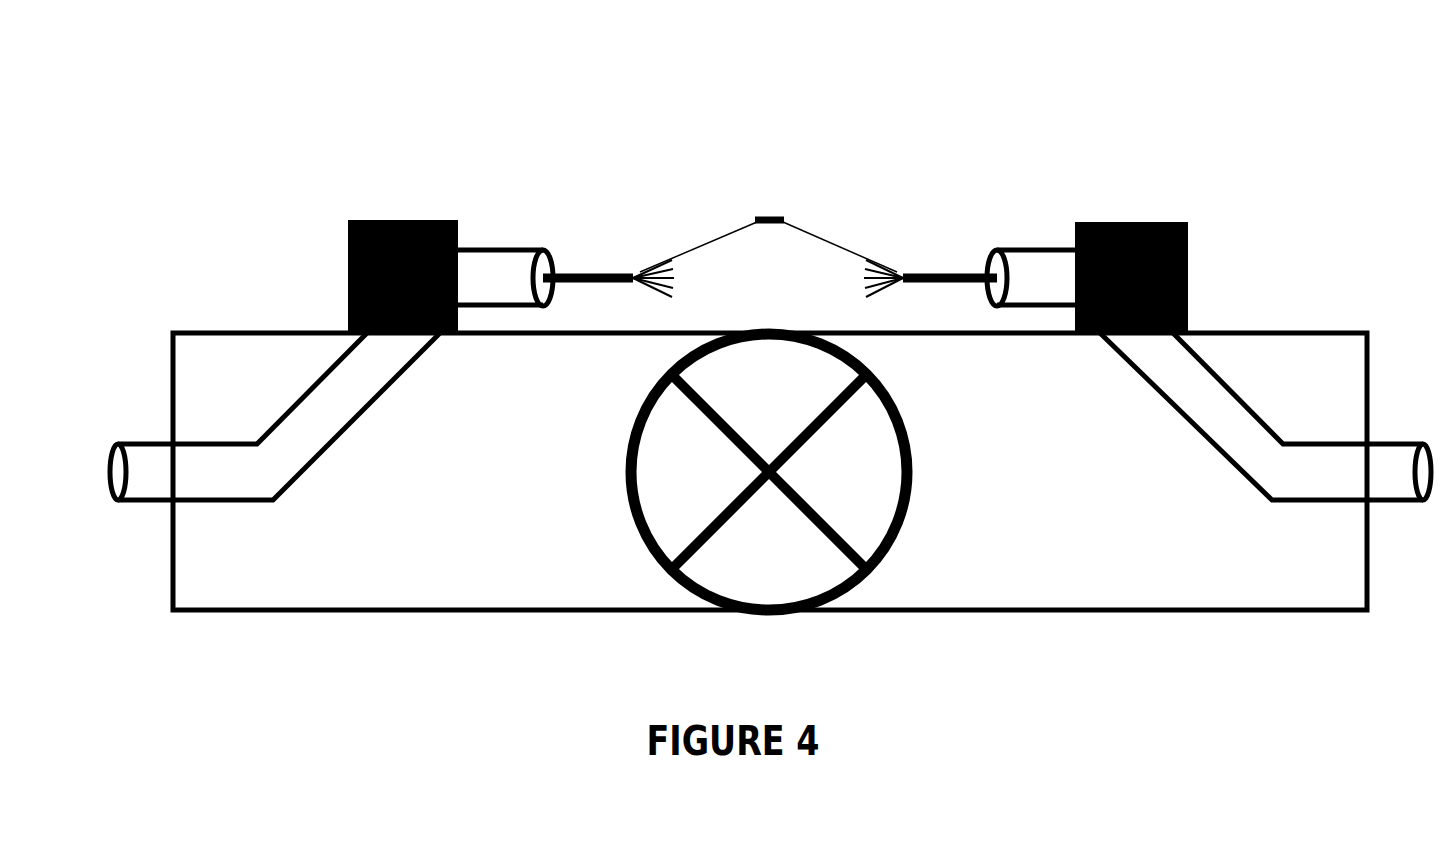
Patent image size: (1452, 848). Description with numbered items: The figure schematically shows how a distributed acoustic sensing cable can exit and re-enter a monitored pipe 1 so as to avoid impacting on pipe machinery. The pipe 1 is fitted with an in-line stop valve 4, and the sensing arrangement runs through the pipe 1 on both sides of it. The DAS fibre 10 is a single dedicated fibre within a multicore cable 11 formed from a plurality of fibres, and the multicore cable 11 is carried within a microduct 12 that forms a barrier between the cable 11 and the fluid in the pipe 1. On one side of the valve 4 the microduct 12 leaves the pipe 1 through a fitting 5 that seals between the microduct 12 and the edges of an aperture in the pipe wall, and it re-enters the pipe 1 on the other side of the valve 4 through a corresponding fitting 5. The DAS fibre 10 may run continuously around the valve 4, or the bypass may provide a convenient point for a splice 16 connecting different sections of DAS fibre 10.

The pipe 1 is at (727, 338).
The in-line stop valve 4 is at (914, 504).
The fitting 5 is at (859, 200).
The DAS fibre 10 is at (711, 235).
The multicore cable 11 is at (852, 159).
The microduct 12 is at (534, 310).
The splice 16 is at (880, 143).